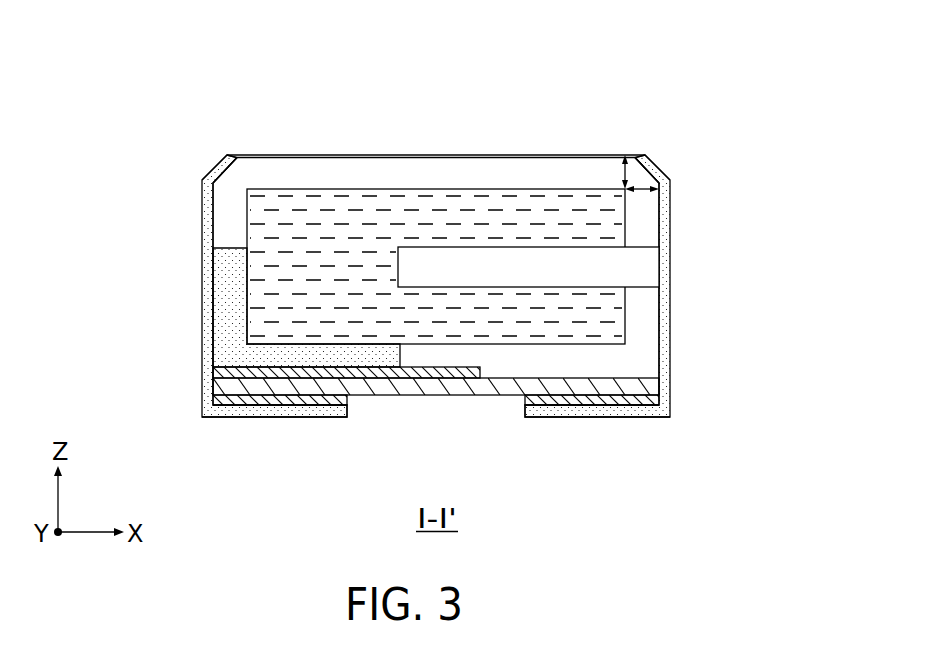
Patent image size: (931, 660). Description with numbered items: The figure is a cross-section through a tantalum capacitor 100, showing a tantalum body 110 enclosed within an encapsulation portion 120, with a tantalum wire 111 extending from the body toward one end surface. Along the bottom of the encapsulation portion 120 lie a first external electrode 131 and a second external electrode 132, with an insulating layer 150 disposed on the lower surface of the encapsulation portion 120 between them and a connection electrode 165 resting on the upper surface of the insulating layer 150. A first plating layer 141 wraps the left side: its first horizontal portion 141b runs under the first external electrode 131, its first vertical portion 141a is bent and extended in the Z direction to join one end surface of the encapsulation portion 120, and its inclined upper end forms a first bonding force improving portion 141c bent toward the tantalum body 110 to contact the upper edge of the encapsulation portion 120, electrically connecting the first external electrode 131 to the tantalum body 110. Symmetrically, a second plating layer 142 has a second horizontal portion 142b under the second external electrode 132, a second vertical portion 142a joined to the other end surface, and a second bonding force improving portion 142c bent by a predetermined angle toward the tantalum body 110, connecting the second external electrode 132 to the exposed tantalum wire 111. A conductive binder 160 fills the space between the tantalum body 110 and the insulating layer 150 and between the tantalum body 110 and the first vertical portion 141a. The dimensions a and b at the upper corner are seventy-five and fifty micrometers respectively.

The tantalum capacitor 100 is at (295, 72).
The tantalum body 110 is at (443, 203).
The tantalum wire 111 is at (527, 265).
The encapsulation portion 120 is at (325, 172).
The first external electrode 131 is at (337, 397).
The second external electrode 132 is at (567, 403).
The first plating layer 141 is at (192, 295).
The first vertical portion 141a is at (203, 297).
The first horizontal portion 141b is at (247, 427).
The first bonding force improving portion 141c is at (212, 165).
The second plating layer 142 is at (681, 296).
The second vertical portion 142a is at (665, 298).
The second horizontal portion 142b is at (650, 389).
The second bonding force improving portion 142c is at (662, 167).
The insulating layer 150 is at (449, 395).
The conductive binder 160 is at (268, 355).
The connection electrode 165 is at (393, 373).
The dimension a is at (643, 188).
The dimension b is at (623, 170).